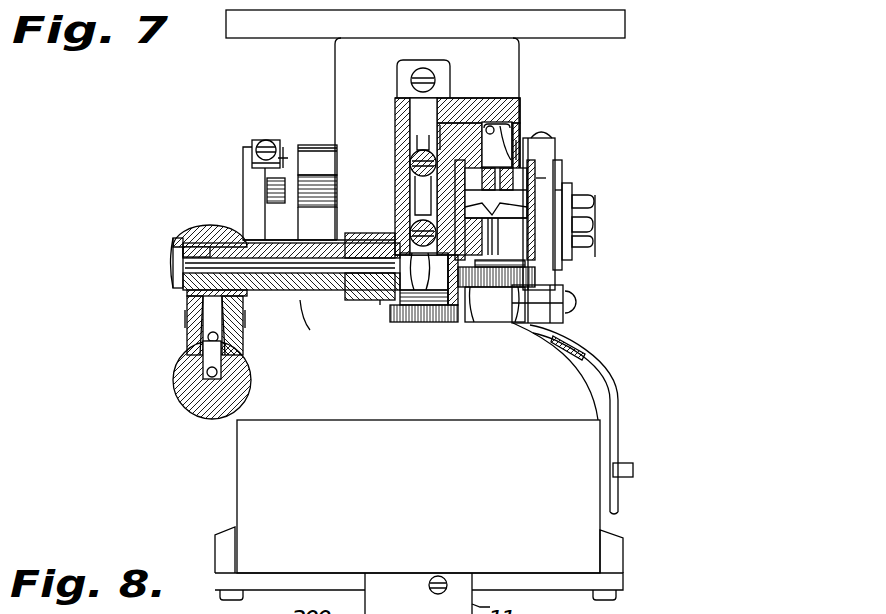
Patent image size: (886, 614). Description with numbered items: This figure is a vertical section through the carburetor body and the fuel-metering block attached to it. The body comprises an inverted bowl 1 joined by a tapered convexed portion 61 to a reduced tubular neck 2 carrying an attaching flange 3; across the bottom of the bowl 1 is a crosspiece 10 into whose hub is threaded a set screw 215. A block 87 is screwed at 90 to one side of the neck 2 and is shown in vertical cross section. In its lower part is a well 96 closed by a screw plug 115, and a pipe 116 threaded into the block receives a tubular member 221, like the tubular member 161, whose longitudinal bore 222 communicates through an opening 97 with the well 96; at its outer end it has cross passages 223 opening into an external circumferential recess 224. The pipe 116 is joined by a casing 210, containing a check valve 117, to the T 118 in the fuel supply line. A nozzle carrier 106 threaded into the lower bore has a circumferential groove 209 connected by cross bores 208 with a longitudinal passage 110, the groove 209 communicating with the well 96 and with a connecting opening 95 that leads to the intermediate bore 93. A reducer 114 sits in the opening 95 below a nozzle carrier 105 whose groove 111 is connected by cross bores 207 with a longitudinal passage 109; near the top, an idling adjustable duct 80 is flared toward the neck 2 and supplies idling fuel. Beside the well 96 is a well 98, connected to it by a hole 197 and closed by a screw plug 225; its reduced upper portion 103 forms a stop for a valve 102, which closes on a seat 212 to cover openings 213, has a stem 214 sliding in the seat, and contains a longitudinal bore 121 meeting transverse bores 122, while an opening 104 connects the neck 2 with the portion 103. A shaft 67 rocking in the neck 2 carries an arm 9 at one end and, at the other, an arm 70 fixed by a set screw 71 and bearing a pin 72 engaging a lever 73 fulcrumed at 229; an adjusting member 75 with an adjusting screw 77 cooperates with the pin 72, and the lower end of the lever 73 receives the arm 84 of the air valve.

The inverted bowl 1 is at (245, 483).
The reduced tubular neck 2 is at (340, 50).
The attaching flange 3 is at (238, 28).
The arm 9 is at (250, 195).
The crosspiece 10 is at (535, 585).
The tapered convexed portion 61 is at (286, 353).
The shaft 67 is at (284, 148).
The arm 70 is at (548, 160).
The set screw 71 is at (556, 136).
The pin or projection 72 is at (605, 222).
The lever 73 is at (612, 358).
The adjusting member 75 is at (578, 192).
The adjusting screw 77 is at (590, 215).
The idling adjustable duct 80 is at (400, 112).
The arm of the air valve 84 is at (633, 473).
The block 87 is at (447, 92).
The screw connection 90 is at (410, 76).
The intermediate bore 93 is at (492, 125).
The connecting opening 95 is at (402, 198).
The well 96 is at (398, 326).
The opening 97 is at (368, 304).
The well 98 is at (508, 322).
The valve 102 is at (556, 195).
The reduced upper portion of the well 103 is at (512, 150).
The opening 104 is at (500, 135).
The nozzle carrier 105 is at (412, 150).
The nozzle carrier 106 is at (410, 240).
The longitudinal passage 109 is at (432, 160).
The longitudinal passage 110 is at (482, 290).
The external circumferential groove 111 is at (410, 162).
The reducer 114 is at (398, 186).
The screw plug 115 is at (432, 328).
The pipe 116 is at (186, 247).
The check valve 117 is at (205, 362).
The T 118 is at (200, 412).
The longitudinal bore 121 is at (535, 150).
The transverse bores 122 is at (540, 180).
The tubular member 161 is at (530, 130).
The hole 197 is at (470, 290).
The cross bores 207 is at (342, 160).
The cross bores 208 is at (340, 229).
The external circumferential groove 209 is at (385, 305).
The casing 210 is at (188, 325).
The seat 212 is at (570, 252).
The openings 213 is at (588, 237).
The stem 214 is at (558, 280).
The set screw 215 is at (440, 576).
The tubular member 221 is at (305, 292).
The longitudinal bore 222 is at (240, 238).
The cross passages 223 is at (192, 283).
The external circumferential recess 224 is at (180, 252).
The screw plug 225 is at (610, 378).
The fulcrum 229 is at (578, 308).